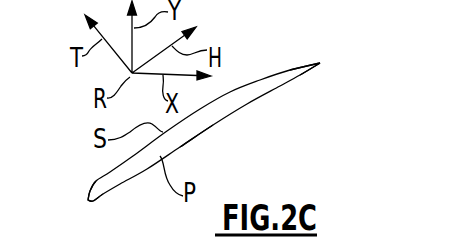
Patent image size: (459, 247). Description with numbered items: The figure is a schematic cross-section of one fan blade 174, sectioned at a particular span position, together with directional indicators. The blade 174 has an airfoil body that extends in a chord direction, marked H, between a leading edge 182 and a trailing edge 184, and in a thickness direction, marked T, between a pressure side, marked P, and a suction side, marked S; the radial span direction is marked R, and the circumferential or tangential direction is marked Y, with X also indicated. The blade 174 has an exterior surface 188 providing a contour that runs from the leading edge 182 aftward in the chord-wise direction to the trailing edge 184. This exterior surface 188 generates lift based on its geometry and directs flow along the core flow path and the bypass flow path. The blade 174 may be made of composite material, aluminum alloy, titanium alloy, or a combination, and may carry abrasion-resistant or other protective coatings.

The fan blade 174 is at (274, 52).
The leading edge 182 is at (88, 201).
The trailing edge 184 is at (320, 64).
The exterior surface 188 is at (202, 149).